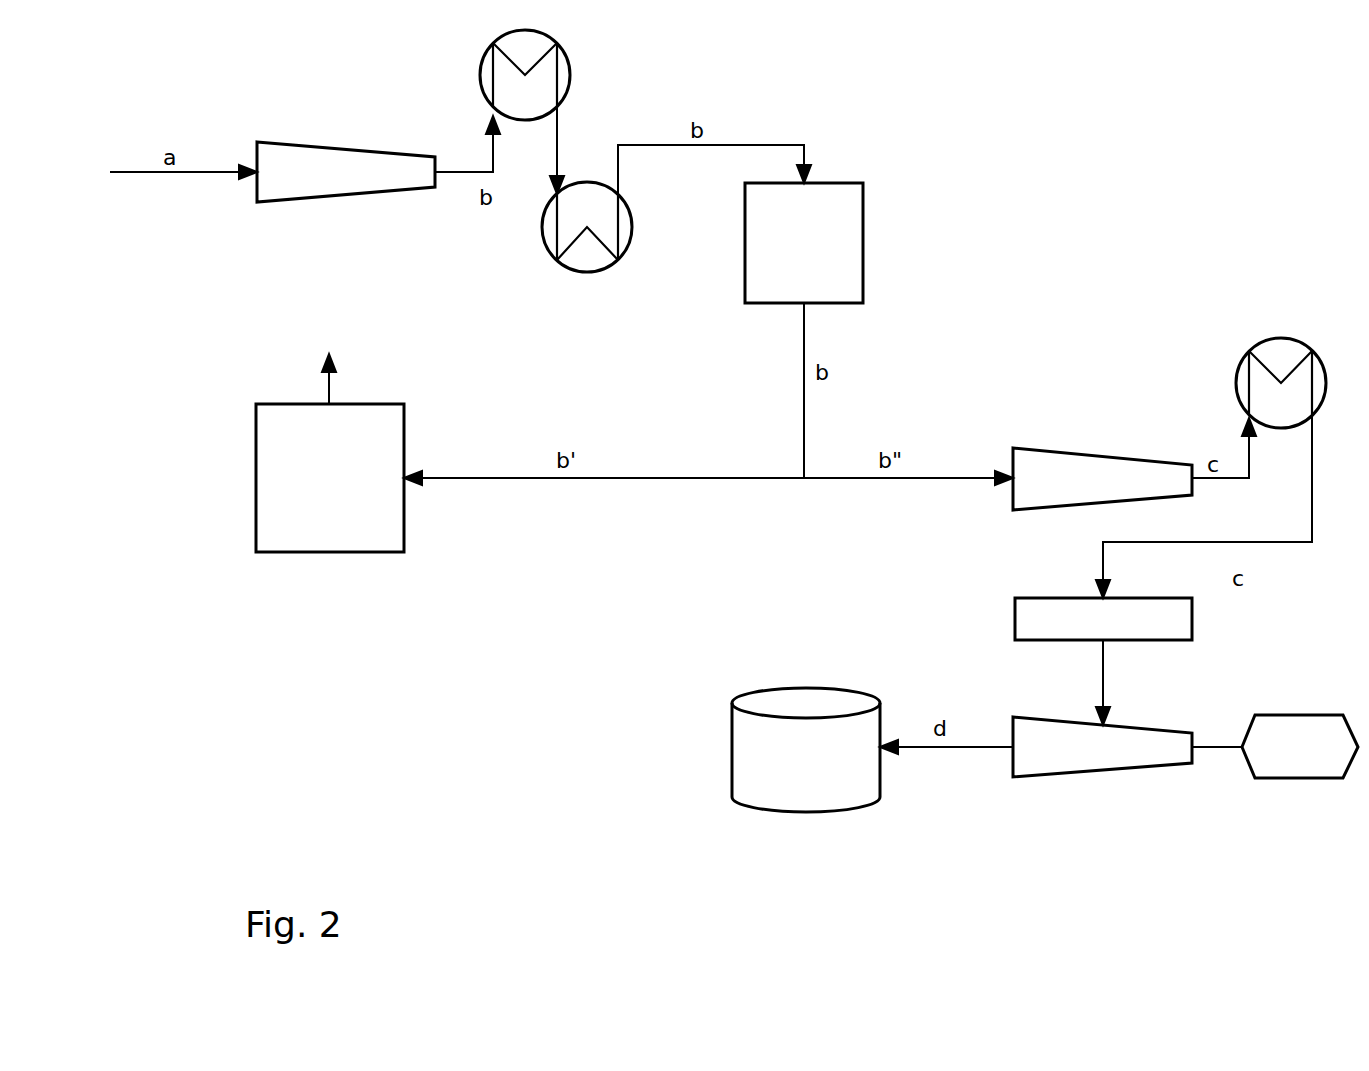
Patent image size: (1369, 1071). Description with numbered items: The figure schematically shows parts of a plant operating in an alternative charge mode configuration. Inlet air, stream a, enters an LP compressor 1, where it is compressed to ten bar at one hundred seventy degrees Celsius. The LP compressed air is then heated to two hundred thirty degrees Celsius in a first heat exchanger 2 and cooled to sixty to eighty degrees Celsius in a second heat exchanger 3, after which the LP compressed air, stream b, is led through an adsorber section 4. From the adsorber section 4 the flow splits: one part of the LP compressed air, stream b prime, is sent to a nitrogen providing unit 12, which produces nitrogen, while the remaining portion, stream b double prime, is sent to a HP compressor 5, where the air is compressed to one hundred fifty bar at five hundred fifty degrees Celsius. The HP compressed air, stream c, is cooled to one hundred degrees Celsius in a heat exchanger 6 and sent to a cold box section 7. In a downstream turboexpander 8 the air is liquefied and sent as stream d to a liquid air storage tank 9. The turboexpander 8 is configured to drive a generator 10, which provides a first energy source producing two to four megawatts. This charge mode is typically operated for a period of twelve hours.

The LP compressor 1 is at (346, 172).
The first heat exchanger 2 is at (525, 75).
The second heat exchanger 3 is at (587, 227).
The adsorber section 4 is at (804, 243).
The HP compressor 5 is at (1102, 479).
The heat exchanger 6 is at (1281, 383).
The cold box section 7 is at (1103, 619).
The turboexpander 8 is at (1102, 747).
The liquid air storage tank 9 is at (806, 750).
The generator 10 is at (1300, 746).
The nitrogen providing unit 12 is at (330, 438).